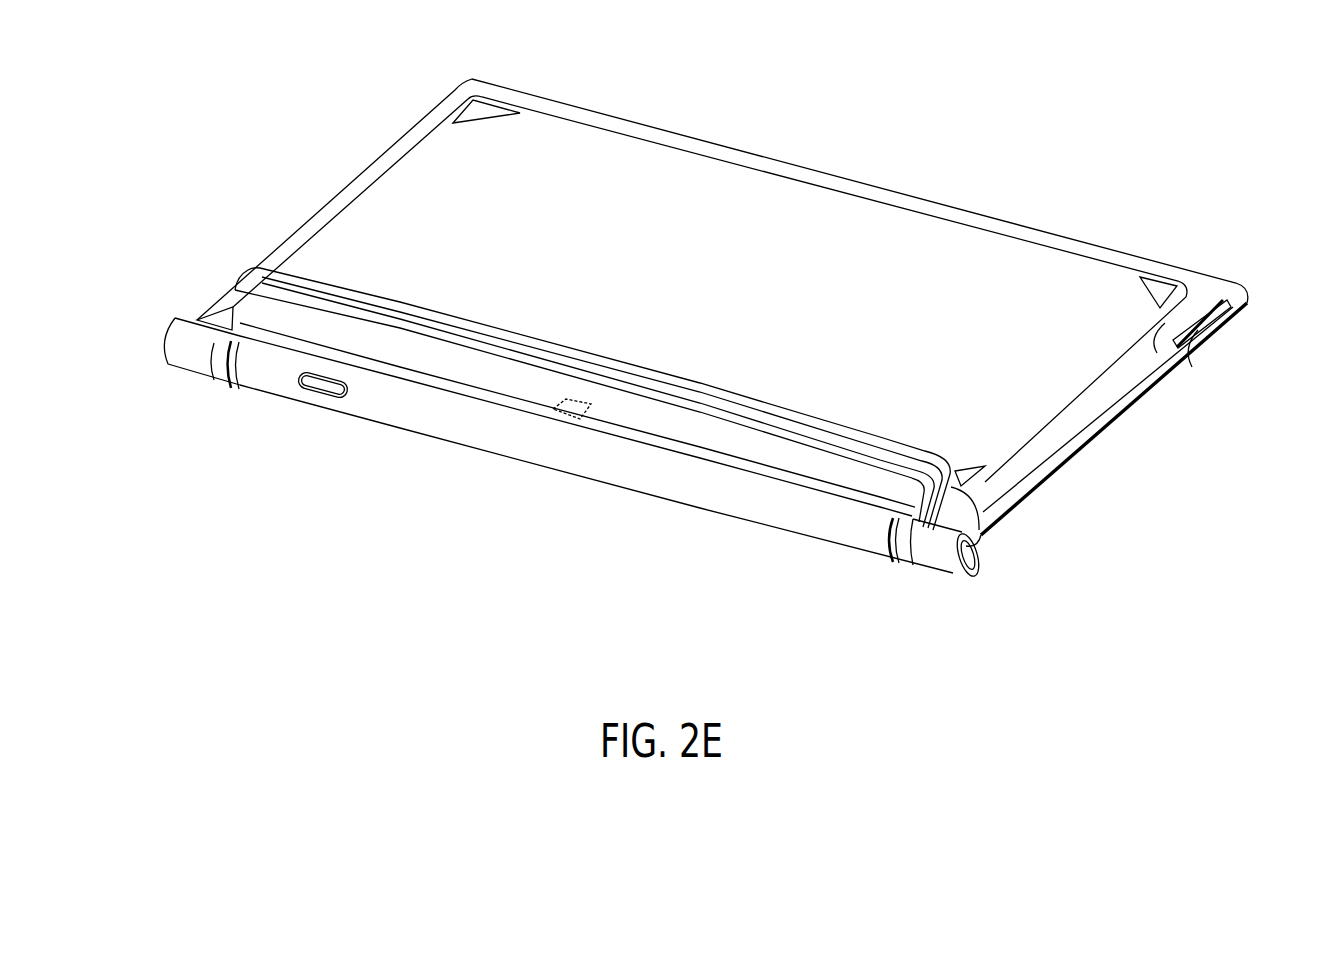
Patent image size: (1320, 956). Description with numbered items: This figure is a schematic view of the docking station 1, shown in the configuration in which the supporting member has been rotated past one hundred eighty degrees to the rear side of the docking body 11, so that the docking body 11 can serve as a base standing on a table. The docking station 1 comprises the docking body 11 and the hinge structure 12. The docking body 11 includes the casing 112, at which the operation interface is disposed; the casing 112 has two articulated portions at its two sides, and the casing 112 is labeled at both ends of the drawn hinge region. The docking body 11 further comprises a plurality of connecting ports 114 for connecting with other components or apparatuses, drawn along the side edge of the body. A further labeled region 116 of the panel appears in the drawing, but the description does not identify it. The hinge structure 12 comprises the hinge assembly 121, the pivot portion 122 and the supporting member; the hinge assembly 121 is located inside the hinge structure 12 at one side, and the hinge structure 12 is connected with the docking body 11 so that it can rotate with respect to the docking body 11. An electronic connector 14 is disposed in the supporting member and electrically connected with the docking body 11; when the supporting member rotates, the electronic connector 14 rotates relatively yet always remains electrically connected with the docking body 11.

The docking station 1 is at (874, 117).
The docking body 11 is at (1223, 276).
The casing 112 is at (195, 343).
The connecting ports 114 is at (1182, 352).
The display surface 116 is at (1081, 281).
The hinge structure 12 is at (993, 620).
The hinge assembly 121 is at (973, 567).
The pivot portion 122 is at (858, 527).
The electronic connector 14 is at (578, 395).